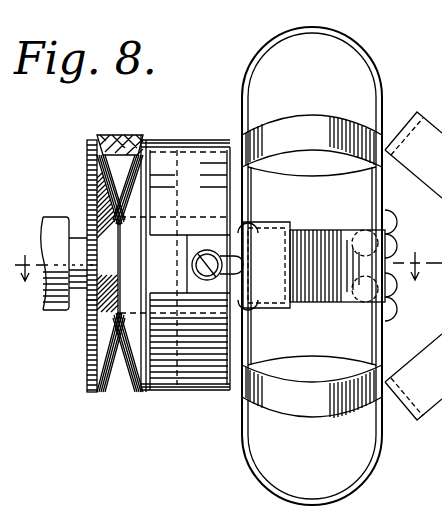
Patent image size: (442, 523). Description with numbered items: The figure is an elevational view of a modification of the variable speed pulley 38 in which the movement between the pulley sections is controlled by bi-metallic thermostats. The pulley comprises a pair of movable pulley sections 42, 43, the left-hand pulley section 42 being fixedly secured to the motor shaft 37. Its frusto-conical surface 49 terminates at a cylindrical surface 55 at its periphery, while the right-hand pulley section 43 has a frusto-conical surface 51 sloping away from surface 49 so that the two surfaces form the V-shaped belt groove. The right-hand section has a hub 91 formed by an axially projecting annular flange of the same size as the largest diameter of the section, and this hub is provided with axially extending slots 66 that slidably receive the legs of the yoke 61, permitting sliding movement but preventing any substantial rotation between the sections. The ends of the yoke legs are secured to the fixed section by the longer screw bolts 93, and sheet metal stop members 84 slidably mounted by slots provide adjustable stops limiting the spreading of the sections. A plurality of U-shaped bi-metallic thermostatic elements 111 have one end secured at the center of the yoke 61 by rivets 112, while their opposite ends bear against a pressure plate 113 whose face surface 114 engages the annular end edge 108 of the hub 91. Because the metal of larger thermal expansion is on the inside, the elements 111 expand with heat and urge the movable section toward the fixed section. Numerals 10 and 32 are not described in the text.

The axis / direction line 10 is at (227, 257).
The drive shaft 32 is at (55, 218).
The motor shaft 37 is at (80, 290).
The variable speed pulley 38 is at (78, 369).
The pulley section 42 is at (88, 157).
The pulley section 43 is at (131, 392).
The frusto-conical surface 49 is at (106, 394).
The frusto-conical surface 51 is at (128, 172).
The cylindrical surface 55 is at (92, 140).
The yoke 61 is at (338, 302).
The axially extending slots 66 is at (178, 245).
The sheet metal stop members 84 is at (286, 255).
The hub 91 is at (197, 143).
The screw bolts 93 is at (208, 281).
The edge 108 is at (228, 385).
The bi-metallic thermostatic elements 111 is at (298, 38).
The rivets 112 is at (398, 295).
The pressure plate 113 is at (248, 353).
The face surface 114 is at (243, 165).